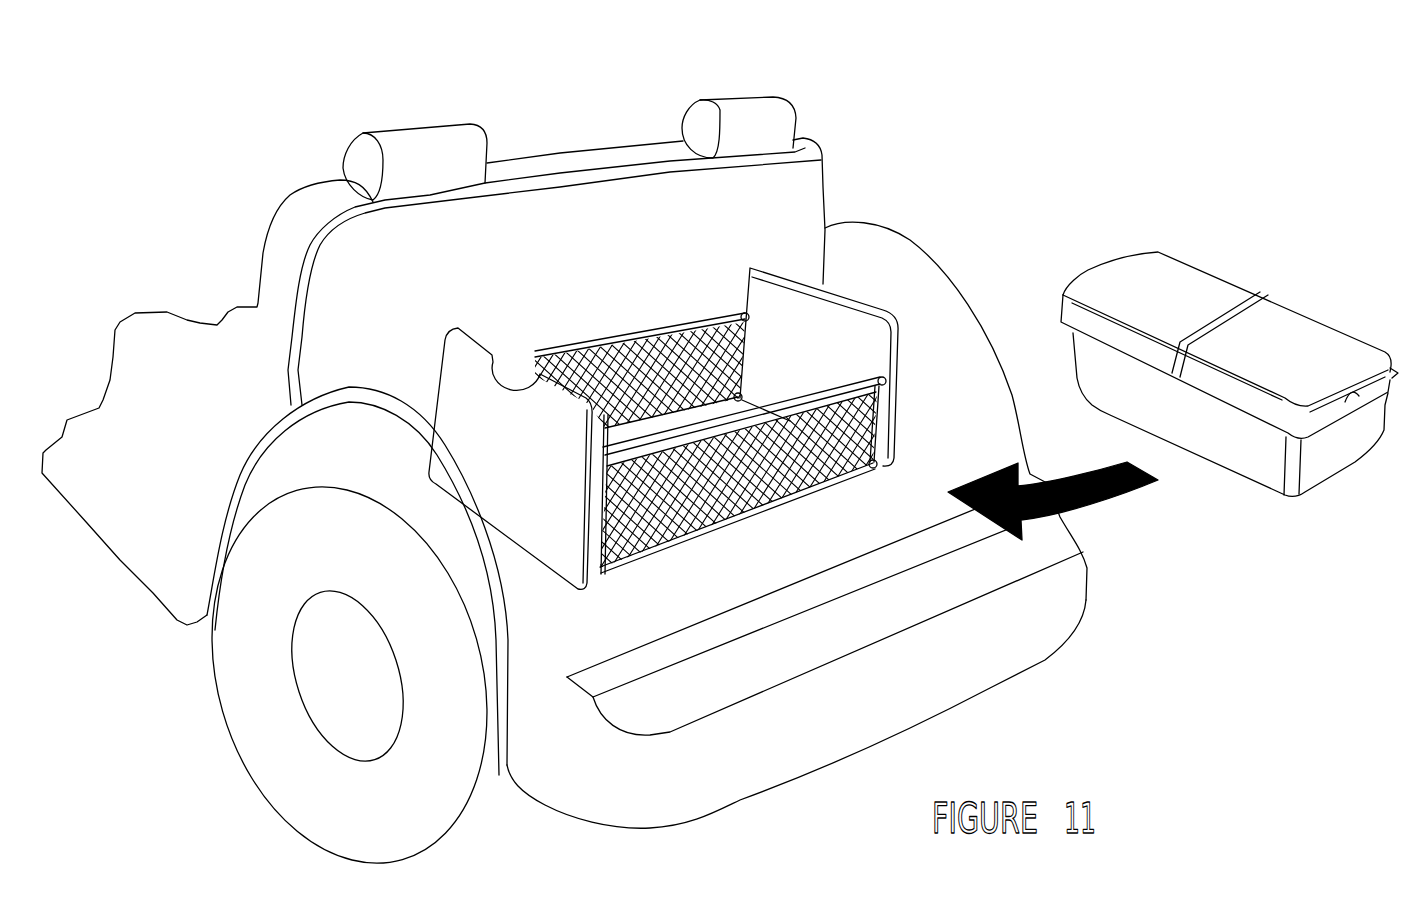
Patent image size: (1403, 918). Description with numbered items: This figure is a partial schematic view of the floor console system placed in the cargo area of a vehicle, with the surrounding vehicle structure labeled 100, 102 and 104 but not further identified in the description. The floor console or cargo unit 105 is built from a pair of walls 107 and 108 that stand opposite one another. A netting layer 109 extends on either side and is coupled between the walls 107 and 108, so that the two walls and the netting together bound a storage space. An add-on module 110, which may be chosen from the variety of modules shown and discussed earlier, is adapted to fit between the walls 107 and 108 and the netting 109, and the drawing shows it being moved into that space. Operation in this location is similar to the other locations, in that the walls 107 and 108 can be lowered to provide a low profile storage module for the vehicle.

The vehicle 100 is at (230, 440).
The seat back 102 is at (640, 252).
The seat cushion 104 is at (790, 570).
The floor console or cargo unit 105 is at (951, 238).
The wall 107 is at (540, 452).
The wall 108 is at (830, 361).
The netting layer 109 is at (750, 487).
The add-on module 110 is at (1304, 278).